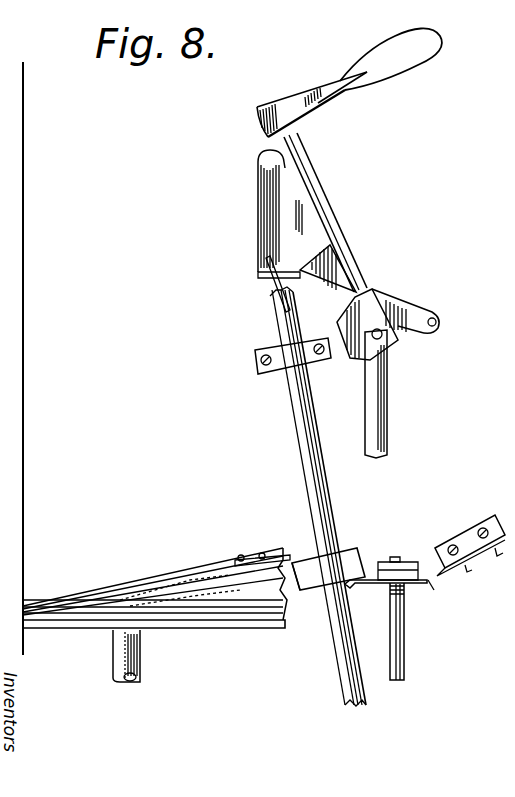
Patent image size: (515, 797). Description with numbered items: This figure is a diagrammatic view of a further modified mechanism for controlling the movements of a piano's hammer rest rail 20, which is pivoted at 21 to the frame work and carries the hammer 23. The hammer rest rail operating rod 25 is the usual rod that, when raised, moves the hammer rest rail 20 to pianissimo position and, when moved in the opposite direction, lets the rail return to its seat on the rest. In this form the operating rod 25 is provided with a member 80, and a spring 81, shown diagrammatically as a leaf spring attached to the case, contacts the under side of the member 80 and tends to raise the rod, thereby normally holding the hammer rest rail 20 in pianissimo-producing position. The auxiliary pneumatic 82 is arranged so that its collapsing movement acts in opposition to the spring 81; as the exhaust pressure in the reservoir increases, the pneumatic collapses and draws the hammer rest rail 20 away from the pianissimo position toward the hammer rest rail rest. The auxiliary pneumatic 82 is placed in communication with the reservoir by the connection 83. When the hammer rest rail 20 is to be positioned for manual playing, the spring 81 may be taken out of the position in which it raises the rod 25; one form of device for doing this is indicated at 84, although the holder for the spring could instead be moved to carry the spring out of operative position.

The hammer rest rail 20 is at (268, 232).
The pivot 21 is at (433, 320).
The hammer 23 is at (315, 182).
The hammer rest rail operating rod 25 is at (306, 460).
The member 80 is at (358, 552).
The spring 81 is at (423, 582).
The auxiliary pneumatic 82 is at (132, 600).
The connection 83 is at (141, 655).
The spring releasing device 84 is at (407, 658).